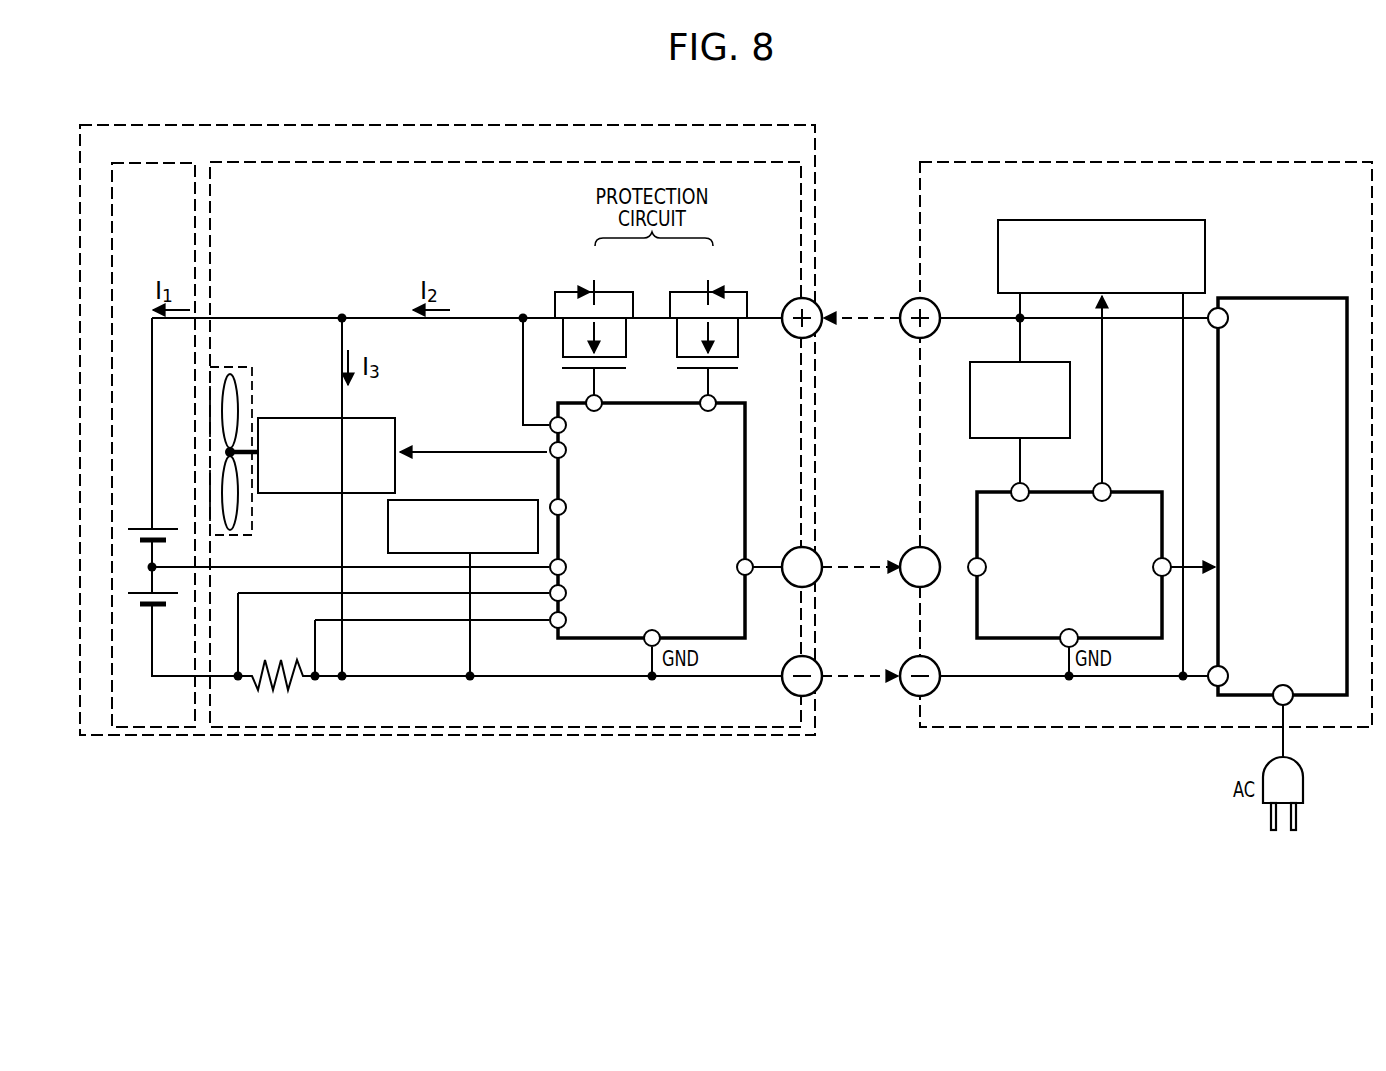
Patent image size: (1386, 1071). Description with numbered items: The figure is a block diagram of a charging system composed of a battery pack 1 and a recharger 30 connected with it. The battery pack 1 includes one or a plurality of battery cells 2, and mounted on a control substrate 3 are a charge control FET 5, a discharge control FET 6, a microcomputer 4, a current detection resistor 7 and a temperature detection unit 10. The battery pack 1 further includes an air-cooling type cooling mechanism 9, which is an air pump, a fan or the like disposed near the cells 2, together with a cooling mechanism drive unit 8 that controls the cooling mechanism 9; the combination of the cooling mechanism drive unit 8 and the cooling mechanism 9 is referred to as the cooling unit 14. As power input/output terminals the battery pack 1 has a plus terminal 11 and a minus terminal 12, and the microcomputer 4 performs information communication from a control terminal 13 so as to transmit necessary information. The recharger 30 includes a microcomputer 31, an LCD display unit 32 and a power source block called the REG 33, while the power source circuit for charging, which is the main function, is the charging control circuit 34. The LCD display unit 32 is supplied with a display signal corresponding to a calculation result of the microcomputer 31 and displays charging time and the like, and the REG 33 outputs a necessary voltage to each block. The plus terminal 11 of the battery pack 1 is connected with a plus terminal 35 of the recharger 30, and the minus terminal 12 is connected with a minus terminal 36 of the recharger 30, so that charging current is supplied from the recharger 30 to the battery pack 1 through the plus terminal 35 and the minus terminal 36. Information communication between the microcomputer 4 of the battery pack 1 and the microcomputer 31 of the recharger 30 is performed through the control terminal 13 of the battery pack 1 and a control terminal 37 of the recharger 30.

The battery pack 1 is at (478, 126).
The battery cell 2 is at (148, 163).
The control substrate 3 is at (309, 163).
The microcomputer 4 is at (749, 440).
The charge control FET 5 is at (611, 298).
The discharge control FET 6 is at (697, 298).
The current detection resistor 7 is at (290, 688).
The cooling mechanism drive unit 8 is at (325, 418).
The cooling mechanism 9 is at (240, 390).
The temperature detection unit 10 is at (478, 500).
The plus terminal 11 is at (798, 305).
The minus terminal 12 is at (792, 657).
The control terminal 13 is at (793, 550).
The cooling unit 14 is at (335, 366).
The recharger 30 is at (1044, 163).
The microcomputer 31 is at (1134, 492).
The LCD display unit 32 is at (1166, 220).
The REG 33 is at (978, 439).
The charging control circuit 34 is at (1298, 298).
The plus terminal 35 is at (909, 304).
The minus terminal 36 is at (909, 659).
The control terminal 37 is at (909, 551).